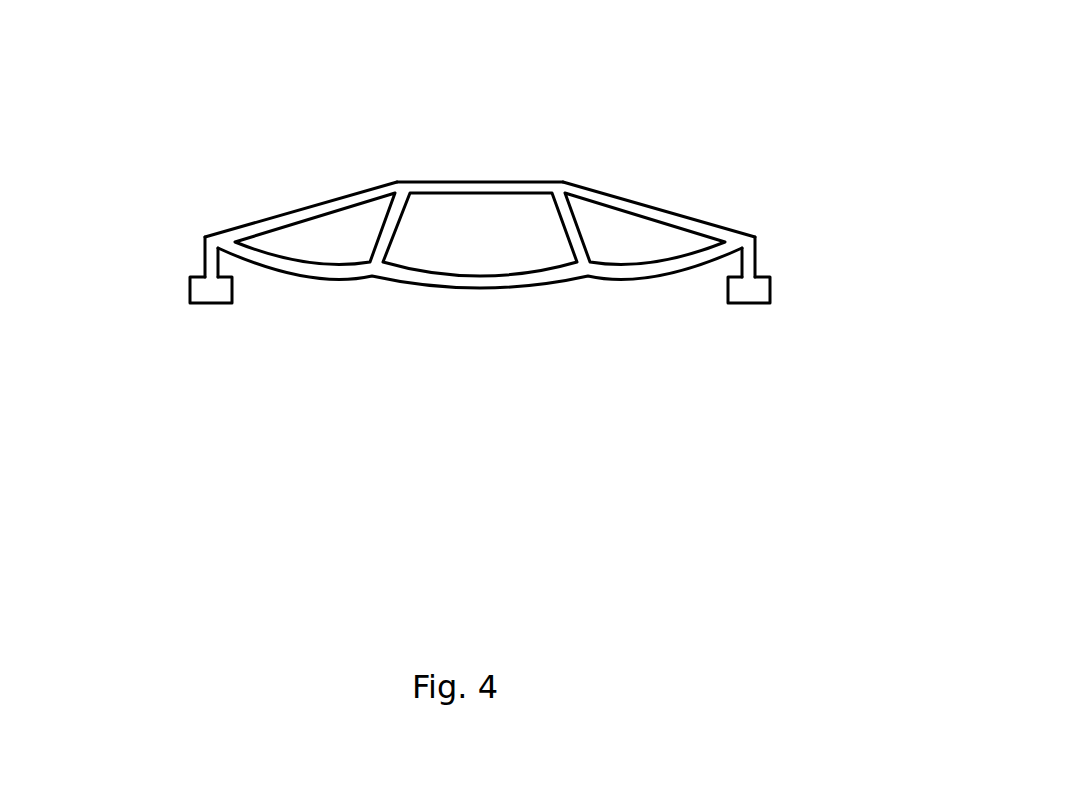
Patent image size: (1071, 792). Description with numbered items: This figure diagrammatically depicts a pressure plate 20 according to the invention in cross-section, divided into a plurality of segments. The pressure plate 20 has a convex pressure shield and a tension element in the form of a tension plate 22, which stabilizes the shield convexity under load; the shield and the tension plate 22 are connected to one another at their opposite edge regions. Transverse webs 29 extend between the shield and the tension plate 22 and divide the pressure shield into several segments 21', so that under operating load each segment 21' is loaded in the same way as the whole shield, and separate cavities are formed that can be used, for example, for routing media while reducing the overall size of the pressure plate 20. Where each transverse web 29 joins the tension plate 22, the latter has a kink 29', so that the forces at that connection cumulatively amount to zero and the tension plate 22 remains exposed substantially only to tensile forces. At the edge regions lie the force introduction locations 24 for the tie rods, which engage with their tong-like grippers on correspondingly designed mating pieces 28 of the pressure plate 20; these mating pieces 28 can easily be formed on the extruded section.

The pressure plate 20 is at (728, 177).
The tension plate 22 is at (450, 187).
The transverse web 29 is at (483, 152).
The kink 29' is at (480, 138).
The force introduction location 24 is at (772, 225).
The mating piece 28 is at (205, 290).
The segment 21' is at (468, 355).